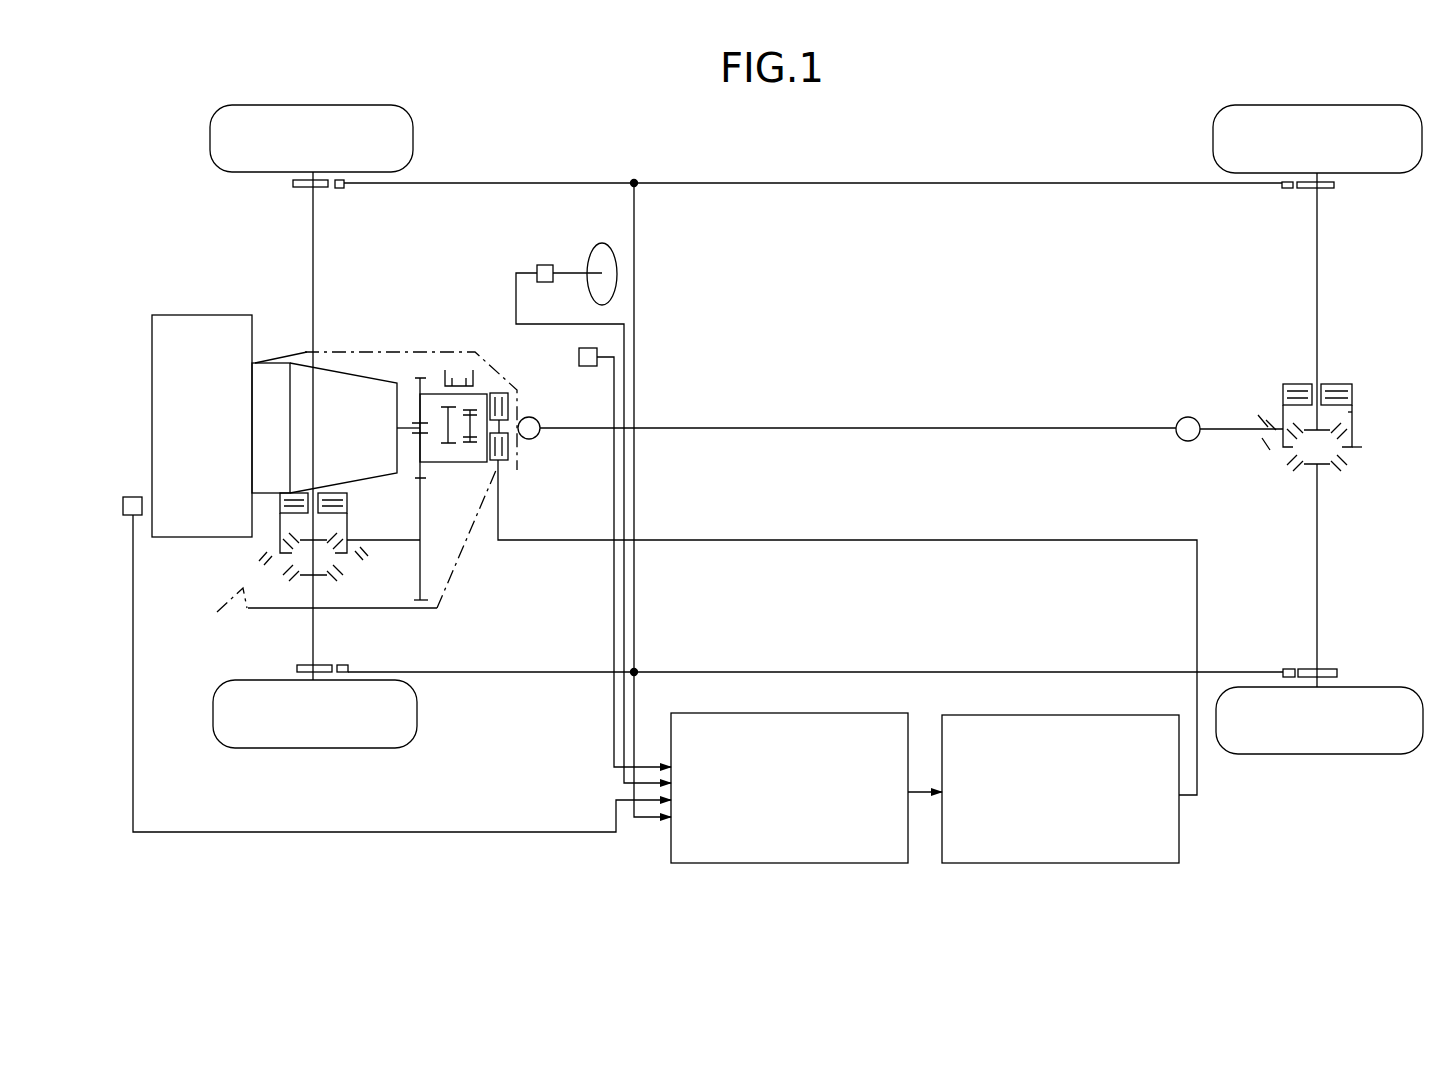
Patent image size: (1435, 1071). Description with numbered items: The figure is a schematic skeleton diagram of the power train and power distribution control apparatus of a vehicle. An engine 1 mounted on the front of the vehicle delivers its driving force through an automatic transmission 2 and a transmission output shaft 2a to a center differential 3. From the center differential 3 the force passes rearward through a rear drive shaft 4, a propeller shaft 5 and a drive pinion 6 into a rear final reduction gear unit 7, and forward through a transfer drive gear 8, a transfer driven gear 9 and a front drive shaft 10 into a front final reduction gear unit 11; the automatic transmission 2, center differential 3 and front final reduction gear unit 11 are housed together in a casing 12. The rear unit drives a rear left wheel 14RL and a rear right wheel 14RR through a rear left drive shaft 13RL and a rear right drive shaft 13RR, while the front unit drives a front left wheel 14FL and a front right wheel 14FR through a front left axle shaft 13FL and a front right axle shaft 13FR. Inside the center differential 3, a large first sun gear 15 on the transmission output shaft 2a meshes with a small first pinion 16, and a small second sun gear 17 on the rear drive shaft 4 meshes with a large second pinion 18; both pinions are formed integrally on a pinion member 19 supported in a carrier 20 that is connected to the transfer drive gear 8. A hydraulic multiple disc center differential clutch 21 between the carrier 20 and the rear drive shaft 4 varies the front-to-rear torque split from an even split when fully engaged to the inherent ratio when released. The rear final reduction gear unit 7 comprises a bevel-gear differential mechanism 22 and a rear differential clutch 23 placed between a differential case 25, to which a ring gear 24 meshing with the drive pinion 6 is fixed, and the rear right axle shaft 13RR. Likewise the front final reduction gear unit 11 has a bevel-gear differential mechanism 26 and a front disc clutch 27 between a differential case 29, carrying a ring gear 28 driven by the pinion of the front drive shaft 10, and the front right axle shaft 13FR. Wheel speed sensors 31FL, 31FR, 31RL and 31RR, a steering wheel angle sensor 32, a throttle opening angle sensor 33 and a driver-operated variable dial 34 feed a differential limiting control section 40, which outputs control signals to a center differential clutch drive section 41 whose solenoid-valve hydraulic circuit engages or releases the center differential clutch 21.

The engine 1 is at (200, 315).
The automatic transmission 2 is at (302, 360).
The transmission output shaft 2a is at (410, 395).
The center differential 3 is at (459, 525).
The rear drive shaft 4 is at (522, 420).
The propeller shaft 5 is at (810, 428).
The drive pinion 6 is at (1229, 429).
The rear final reduction gear unit 7 is at (1351, 332).
The transfer drive gear 8 is at (418, 378).
The transfer driven gear 9 is at (427, 610).
The front drive shaft 10 is at (399, 541).
The front final reduction gear unit 11 is at (378, 585).
The casing 12 is at (228, 603).
The front right axle shaft 13FR is at (313, 257).
The front left axle shaft 13FL is at (313, 657).
The rear right drive shaft 13RR is at (1317, 212).
The rear left drive shaft 13RL is at (1317, 595).
The front right wheel 14FR is at (210, 140).
The front left wheel 14FL is at (417, 712).
The rear right wheel 14RR is at (1213, 140).
The rear left wheel 14RL is at (1357, 754).
The first sun gear 15 is at (448, 463).
The first pinion 16 is at (450, 386).
The second sun gear 17 is at (470, 463).
The second pinion 18 is at (471, 386).
The pinion member 19 is at (467, 386).
The carrier 20 is at (438, 392).
The center differential clutch 21 is at (508, 470).
The differential mechanism 22 is at (1358, 486).
The rear differential clutch 23 is at (1363, 376).
The ring gear 24 is at (1362, 447).
The differential case 25 is at (1354, 418).
The differential mechanism 26 is at (280, 585).
The front disc clutch 27 is at (356, 500).
The ring gear 28 is at (262, 562).
The differential case 29 is at (278, 533).
The wheel speed sensor 31FR is at (341, 188).
The wheel speed sensor 31FL is at (345, 665).
The wheel speed sensor 31RR is at (1285, 188).
The wheel speed sensor 31RL is at (1288, 668).
The steering wheel angle sensor 32 is at (545, 265).
The throttle opening angle sensor 33 is at (131, 497).
The variable dial 34 is at (588, 367).
The differential limiting control section 40 is at (792, 863).
The center differential clutch drive section 41 is at (1067, 863).